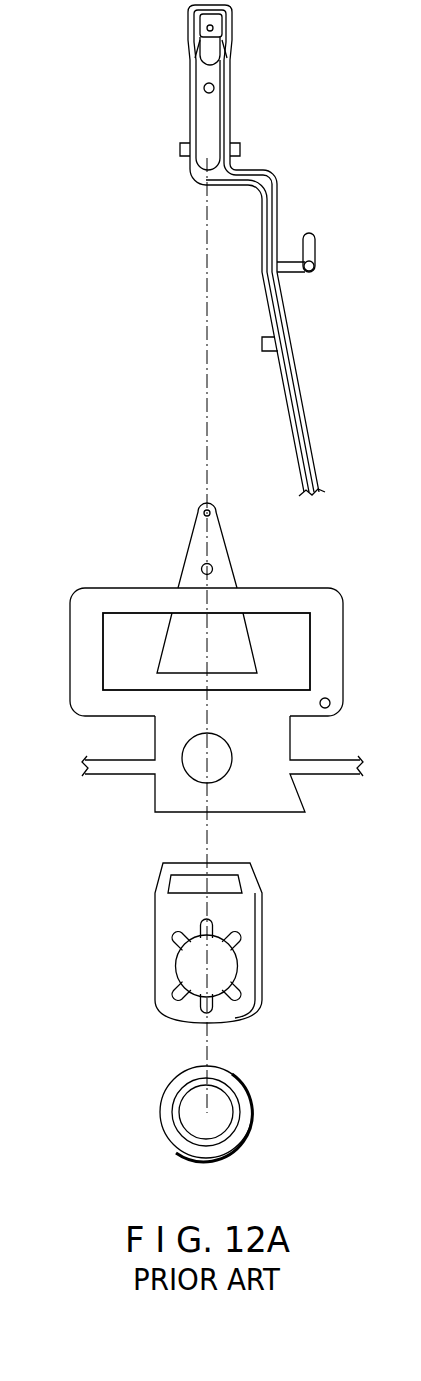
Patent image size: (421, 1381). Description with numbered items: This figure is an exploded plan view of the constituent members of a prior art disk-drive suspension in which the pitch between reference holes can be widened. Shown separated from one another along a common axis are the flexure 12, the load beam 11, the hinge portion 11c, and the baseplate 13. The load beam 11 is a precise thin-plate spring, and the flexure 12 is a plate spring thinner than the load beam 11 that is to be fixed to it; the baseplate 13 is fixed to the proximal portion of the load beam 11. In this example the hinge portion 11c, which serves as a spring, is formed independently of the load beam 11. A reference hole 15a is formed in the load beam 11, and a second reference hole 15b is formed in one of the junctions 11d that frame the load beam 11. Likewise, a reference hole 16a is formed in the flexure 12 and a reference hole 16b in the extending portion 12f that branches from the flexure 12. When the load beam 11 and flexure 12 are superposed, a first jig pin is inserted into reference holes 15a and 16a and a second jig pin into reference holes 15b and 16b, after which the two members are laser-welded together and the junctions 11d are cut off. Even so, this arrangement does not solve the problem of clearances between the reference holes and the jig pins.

The load beam 11 is at (195, 544).
The hinge portion 11c is at (163, 878).
The junction 11d is at (80, 657).
The flexure 12 is at (213, 128).
The extending portion 12f is at (293, 275).
The baseplate 13 is at (270, 803).
The reference hole 15a is at (213, 567).
The reference hole 15b is at (326, 709).
The reference hole 16a is at (214, 86).
The reference hole 16b is at (316, 263).